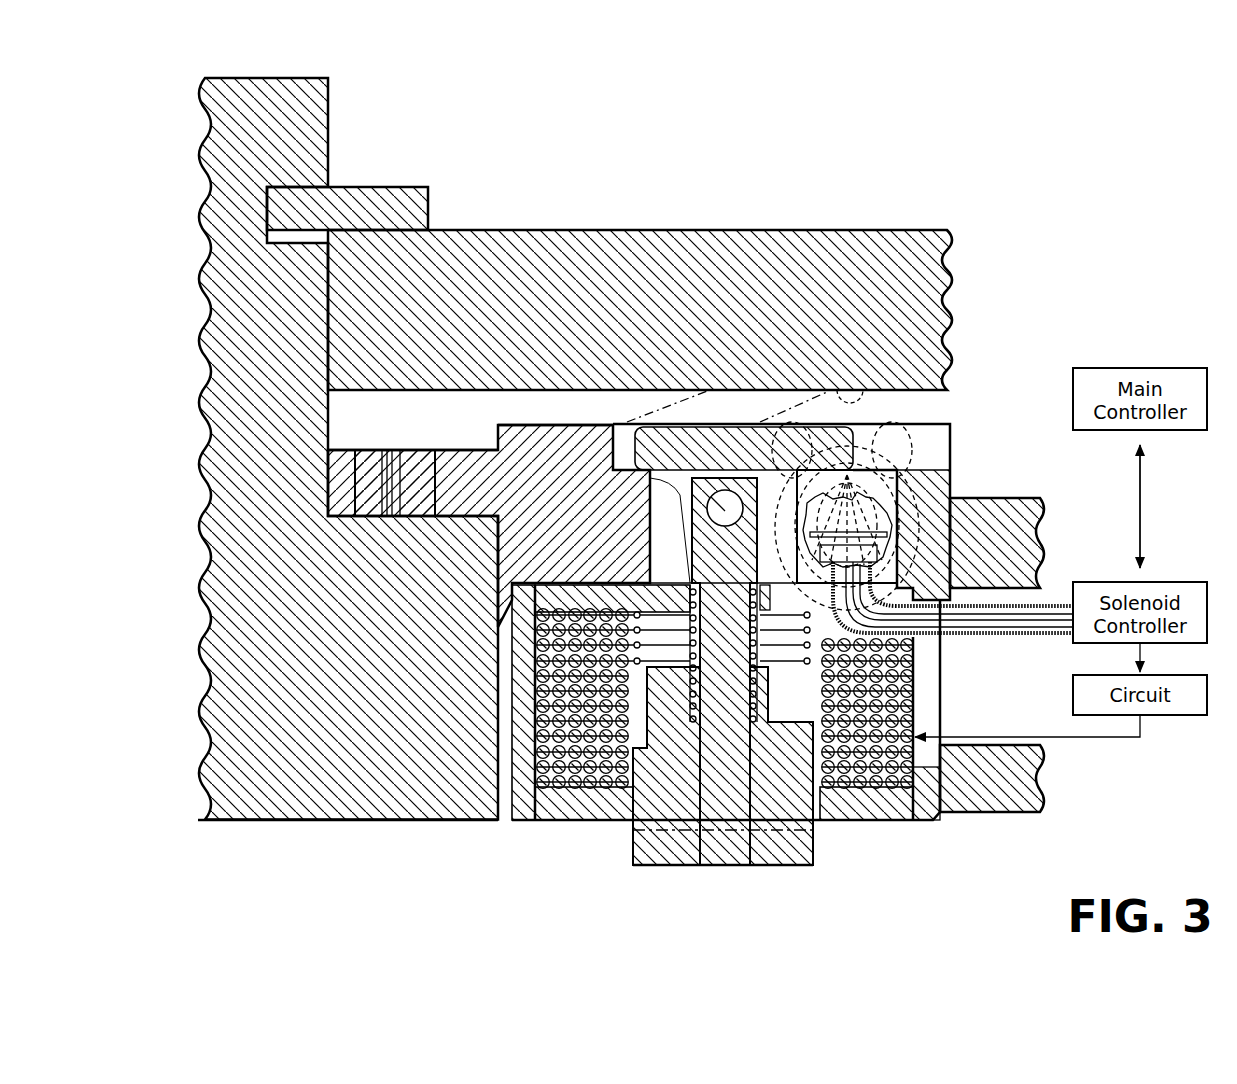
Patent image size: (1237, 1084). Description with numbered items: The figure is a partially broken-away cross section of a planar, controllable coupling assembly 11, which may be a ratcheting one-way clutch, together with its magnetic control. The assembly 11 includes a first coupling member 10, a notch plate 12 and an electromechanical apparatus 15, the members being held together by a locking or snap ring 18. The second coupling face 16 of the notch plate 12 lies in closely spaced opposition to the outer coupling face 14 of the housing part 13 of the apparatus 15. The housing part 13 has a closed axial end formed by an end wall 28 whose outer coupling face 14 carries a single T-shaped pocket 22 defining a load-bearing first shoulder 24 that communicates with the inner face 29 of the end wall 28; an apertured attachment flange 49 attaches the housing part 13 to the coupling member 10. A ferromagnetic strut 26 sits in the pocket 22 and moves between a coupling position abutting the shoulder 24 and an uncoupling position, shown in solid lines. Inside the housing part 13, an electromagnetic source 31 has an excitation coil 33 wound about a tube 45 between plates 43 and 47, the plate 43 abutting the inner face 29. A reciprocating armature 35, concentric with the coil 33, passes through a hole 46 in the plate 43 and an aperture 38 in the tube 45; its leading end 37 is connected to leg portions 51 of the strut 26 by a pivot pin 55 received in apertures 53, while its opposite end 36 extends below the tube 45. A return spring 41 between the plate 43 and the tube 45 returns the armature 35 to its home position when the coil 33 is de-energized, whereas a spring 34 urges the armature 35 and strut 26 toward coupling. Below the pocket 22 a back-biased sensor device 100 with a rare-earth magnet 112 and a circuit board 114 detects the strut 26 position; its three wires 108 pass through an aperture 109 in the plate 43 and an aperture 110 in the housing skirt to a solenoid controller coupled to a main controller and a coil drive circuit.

The first coupling member 10 is at (390, 826).
The planar controllable coupling assembly 11 is at (270, 845).
The notch plate 12 is at (652, 228).
The housing part 13 is at (540, 420).
The outer coupling face 14 is at (597, 420).
The electromechanical apparatus 15 is at (523, 828).
The second coupling face 16 is at (867, 392).
The locking or snap ring 18 is at (378, 187).
The T-shaped recess or pocket 22 is at (900, 433).
The load-bearing first shoulder 24 is at (612, 428).
The ferromagnetic locking element or strut 26 is at (741, 419).
The end wall 28 is at (533, 501).
The inner face 29 is at (603, 593).
The electromagnetic source 31 is at (572, 794).
The excitation coil 33 is at (523, 792).
The spring 34 is at (693, 712).
The reciprocating armature 35 is at (735, 873).
The opposite end of armature 36 is at (718, 853).
The leading end of armature 37 is at (690, 490).
The aperture in tube 38 is at (745, 806).
The return spring 41 is at (647, 718).
The plate 43 is at (530, 600).
The tube 45 is at (822, 862).
The hole in plate 46 is at (703, 598).
The plate 47 is at (870, 822).
The apertured attachment flange 49 is at (370, 450).
The projecting leg portion 51 is at (665, 492).
The aperture in leg portion 53 is at (800, 413).
The pivot pin 55 is at (722, 490).
The sensor device 100 is at (907, 535).
The wires 108 is at (973, 613).
The aperture in plate 109 is at (783, 595).
The aperture in housing side wall 110 is at (930, 604).
The rare-earth magnet 112 is at (888, 522).
The circuit board 114 is at (880, 498).